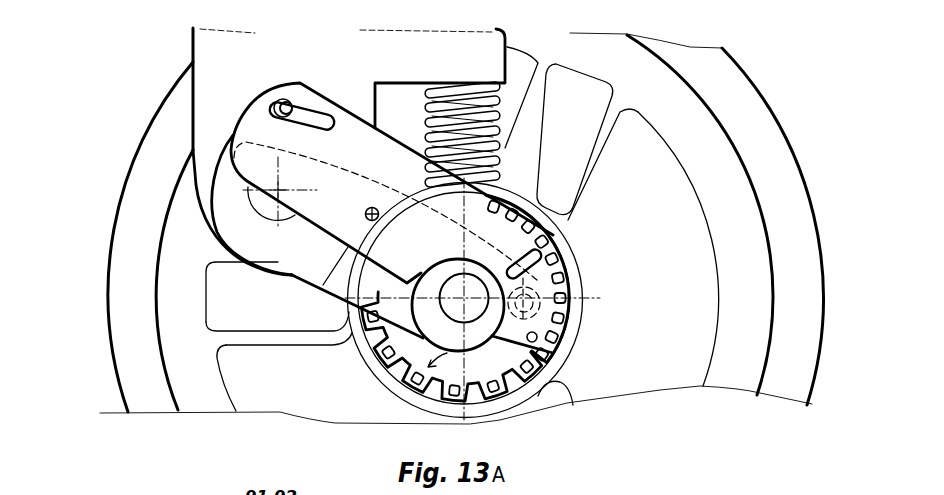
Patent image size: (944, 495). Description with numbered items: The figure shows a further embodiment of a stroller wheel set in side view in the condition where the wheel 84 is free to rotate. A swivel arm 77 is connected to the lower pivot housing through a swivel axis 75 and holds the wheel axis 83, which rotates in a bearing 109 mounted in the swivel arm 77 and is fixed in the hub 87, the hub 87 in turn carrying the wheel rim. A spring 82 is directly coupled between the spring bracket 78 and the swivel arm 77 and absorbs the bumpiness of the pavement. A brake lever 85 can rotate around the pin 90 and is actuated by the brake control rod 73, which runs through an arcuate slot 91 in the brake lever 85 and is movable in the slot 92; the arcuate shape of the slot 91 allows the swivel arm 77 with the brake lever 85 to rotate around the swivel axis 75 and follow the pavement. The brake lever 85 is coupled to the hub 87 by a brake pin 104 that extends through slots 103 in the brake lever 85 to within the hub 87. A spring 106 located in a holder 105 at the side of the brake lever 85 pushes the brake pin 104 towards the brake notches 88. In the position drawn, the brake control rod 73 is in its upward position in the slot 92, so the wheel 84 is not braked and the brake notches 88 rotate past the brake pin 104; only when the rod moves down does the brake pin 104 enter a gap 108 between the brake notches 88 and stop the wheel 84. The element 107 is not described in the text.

The brake control rod 73 is at (286, 100).
The swivel axis 75 is at (250, 207).
The swivel arm 77 is at (230, 190).
The spring bracket 78 is at (440, 68).
The spring 82 is at (497, 128).
The wheel axis 83 is at (447, 308).
The wheel 84 is at (118, 323).
The brake lever 85 is at (353, 128).
The hub 87 is at (586, 272).
The brake notches 88 is at (433, 403).
The pin 90 is at (379, 219).
The arcuate slot 91 is at (325, 108).
The slot 92 is at (258, 120).
The slot 103 is at (518, 248).
The brake pin 104 is at (567, 220).
The holder 105 is at (576, 297).
The spring 106 is at (576, 318).
The pin 107 is at (556, 340).
The gap 108 is at (541, 383).
The bearing 109 is at (420, 308).